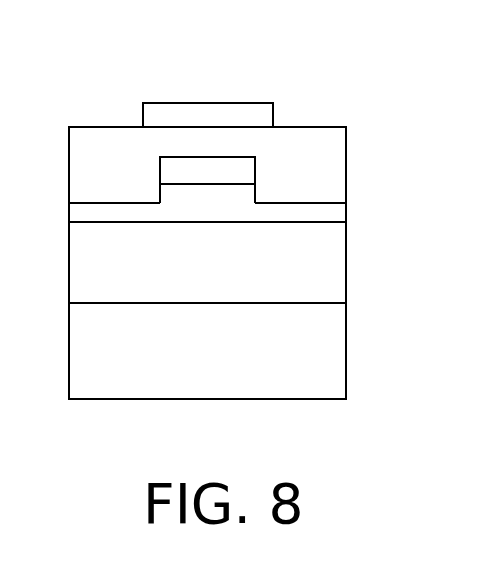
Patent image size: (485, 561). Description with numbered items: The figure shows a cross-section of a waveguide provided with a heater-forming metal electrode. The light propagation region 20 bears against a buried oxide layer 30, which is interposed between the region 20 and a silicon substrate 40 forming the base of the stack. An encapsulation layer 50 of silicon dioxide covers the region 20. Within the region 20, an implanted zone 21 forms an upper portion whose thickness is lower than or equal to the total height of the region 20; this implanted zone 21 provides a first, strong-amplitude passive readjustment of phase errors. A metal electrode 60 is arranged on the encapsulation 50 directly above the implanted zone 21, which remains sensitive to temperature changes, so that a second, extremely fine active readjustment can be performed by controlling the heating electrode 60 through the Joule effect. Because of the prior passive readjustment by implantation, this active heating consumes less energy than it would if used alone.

The light propagation region 20 is at (293, 210).
The implanted zone 21 is at (191, 172).
The buried oxide layer 30 is at (297, 285).
The silicon substrate 40 is at (227, 363).
The encapsulation layer 50 is at (113, 152).
The metal electrode 60 is at (244, 115).